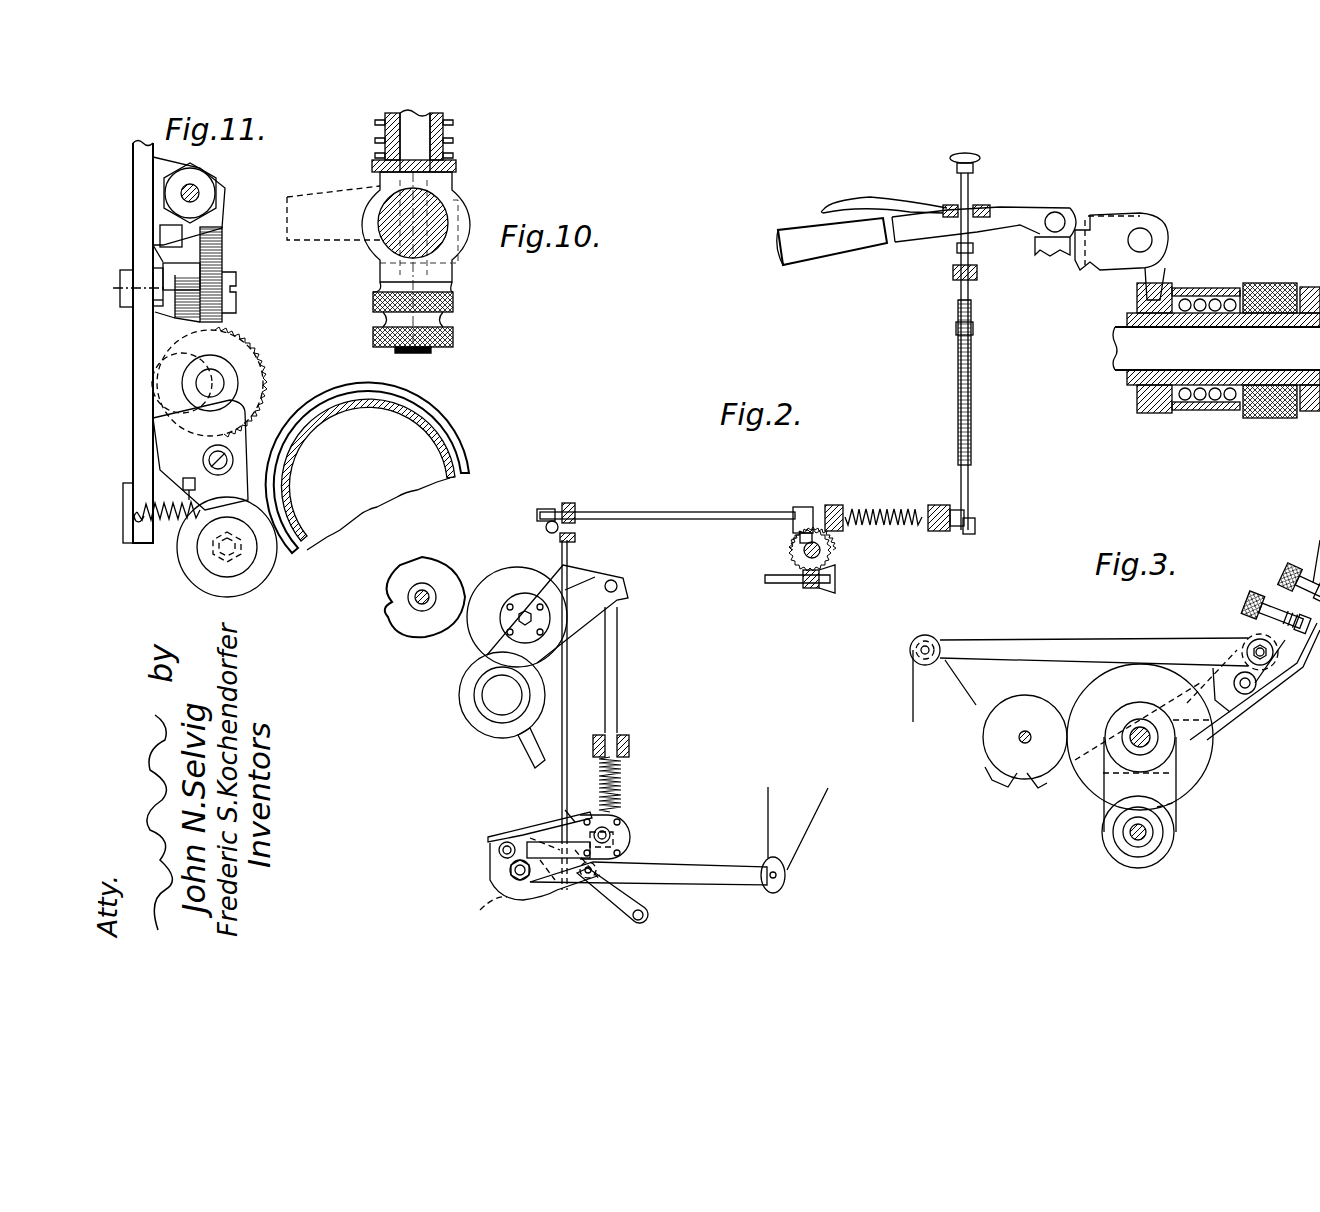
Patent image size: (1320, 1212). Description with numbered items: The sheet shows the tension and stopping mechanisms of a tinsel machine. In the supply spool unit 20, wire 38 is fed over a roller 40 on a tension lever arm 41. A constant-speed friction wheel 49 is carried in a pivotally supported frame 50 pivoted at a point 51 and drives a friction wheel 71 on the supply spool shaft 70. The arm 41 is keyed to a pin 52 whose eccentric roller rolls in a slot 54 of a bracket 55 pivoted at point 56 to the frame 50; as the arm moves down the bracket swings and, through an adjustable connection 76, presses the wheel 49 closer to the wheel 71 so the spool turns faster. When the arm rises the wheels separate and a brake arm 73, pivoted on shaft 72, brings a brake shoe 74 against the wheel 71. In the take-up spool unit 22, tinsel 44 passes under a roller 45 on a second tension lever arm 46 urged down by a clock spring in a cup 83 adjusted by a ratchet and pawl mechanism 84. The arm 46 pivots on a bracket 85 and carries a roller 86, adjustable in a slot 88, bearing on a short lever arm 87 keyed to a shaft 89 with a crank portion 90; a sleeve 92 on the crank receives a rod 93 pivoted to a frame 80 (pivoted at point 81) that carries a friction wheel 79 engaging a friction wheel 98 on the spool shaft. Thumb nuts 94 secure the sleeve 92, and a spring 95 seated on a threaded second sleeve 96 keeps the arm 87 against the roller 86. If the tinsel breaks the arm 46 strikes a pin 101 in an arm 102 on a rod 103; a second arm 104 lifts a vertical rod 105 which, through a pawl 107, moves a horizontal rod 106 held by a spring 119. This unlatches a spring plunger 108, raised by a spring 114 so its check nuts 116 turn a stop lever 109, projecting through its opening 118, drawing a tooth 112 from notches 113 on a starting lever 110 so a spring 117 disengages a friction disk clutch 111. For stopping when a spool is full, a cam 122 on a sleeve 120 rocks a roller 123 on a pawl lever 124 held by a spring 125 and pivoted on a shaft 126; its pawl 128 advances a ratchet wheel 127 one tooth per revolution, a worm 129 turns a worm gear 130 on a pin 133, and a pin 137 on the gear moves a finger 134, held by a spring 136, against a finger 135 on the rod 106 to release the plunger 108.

In FIG. 3, the supply spool unit 20 is at (1043, 842).
In FIG. 2, the take-up spool unit 22 is at (447, 666).
In FIG. 3, the wire 38 is at (912, 688).
In FIG. 3, the roller 40 is at (920, 635).
In FIG. 3, the tension lever arm 41 is at (1070, 640).
In FIG. 2, the tinsel 44 is at (820, 822).
In FIG. 2, the roller 45 is at (787, 885).
In FIG. 2, the second tension lever arm 46 is at (686, 872).
In FIG. 3, the friction wheel 49 is at (1190, 790).
In FIG. 3, the pivotally supported frame 50 is at (1160, 790).
In FIG. 3, the pivot point 51 is at (1145, 838).
In FIG. 3, the pin 52 is at (1268, 668).
In FIG. 3, the slot 54 is at (1263, 673).
In FIG. 3, the bracket 55 is at (1247, 685).
In FIG. 3, the pivot point 56 is at (1243, 695).
In FIG. 3, the shaft 70 is at (1018, 737).
In FIG. 3, the friction wheel 71 is at (985, 752).
In FIG. 3, the shaft 72 is at (1132, 734).
In FIG. 3, the brake arm 73 is at (1070, 800).
In FIG. 3, the brake shoe 74 is at (1000, 785).
In FIG. 3, the adjustable connection 76 is at (1278, 590).
In FIG. 2, the friction wheel 79 is at (504, 568).
In FIG. 2, the pivotally supported frame 80 is at (545, 580).
In FIG. 2, the pivot point 81 is at (500, 702).
In FIG. 2, the cup 83 is at (480, 910).
In FIG. 2, the ratchet and pawl mechanism 84 is at (538, 838).
In FIG. 2, the bracket 85 is at (578, 812).
In FIG. 2, the roller 86 is at (497, 851).
In FIG. 10, the short lever arm 87 is at (312, 242).
In FIG. 2, the short lever arm 87 is at (495, 838).
In FIG. 2, the slot 88 is at (508, 875).
In FIG. 10, the shaft 89 is at (438, 218).
In FIG. 2, the shaft 89 is at (610, 838).
In FIG. 10, the crank portion 90 is at (402, 190).
In FIG. 2, the crank portion 90 is at (618, 805).
In FIG. 10, the sleeve 92 is at (450, 270).
In FIG. 2, the sleeve 92 is at (625, 818).
In FIG. 10, the rod 93 is at (413, 135).
In FIG. 2, the rod 93 is at (620, 665).
In FIG. 10, the thumb nuts 94 is at (455, 330).
In FIG. 10, the spring 95 is at (457, 158).
In FIG. 2, the spring 95 is at (600, 750).
In FIG. 10, the second sleeve 96 is at (453, 125).
In FIG. 2, the second sleeve 96 is at (620, 780).
In FIG. 2, the friction wheel 98 is at (440, 555).
In FIG. 2, the pin 101 is at (630, 905).
In FIG. 2, the arm 102 is at (612, 905).
In FIG. 2, the rod 103 is at (570, 893).
In FIG. 2, the second arm 104 is at (547, 887).
In FIG. 2, the vertical rod 105 is at (573, 655).
In FIG. 11, the horizontal rod 106 is at (196, 188).
In FIG. 2, the horizontal rod 106 is at (640, 512).
In FIG. 2, the pawl 107 is at (560, 508).
In FIG. 2, the spring plunger 108 is at (972, 500).
In FIG. 2, the stop lever 109 is at (975, 205).
In FIG. 2, the starting lever 110 is at (806, 247).
In FIG. 2, the friction disk clutch 111 is at (1256, 275).
In FIG. 2, the tooth 112 is at (1065, 245).
In FIG. 2, the notches 113 is at (1085, 260).
In FIG. 2, the spring 114 is at (972, 422).
In FIG. 2, the check nuts 116 is at (955, 250).
In FIG. 2, the spring 117 is at (1185, 400).
In FIG. 2, the opening 118 is at (960, 195).
In FIG. 2, the spring 119 is at (880, 510).
In FIG. 11, the sleeve 120 is at (300, 552).
In FIG. 11, the cam 122 is at (455, 432).
In FIG. 11, the roller 123 is at (230, 597).
In FIG. 11, the pawl lever 124 is at (242, 430).
In FIG. 11, the spring 125 is at (168, 522).
In FIG. 11, the shaft 126 is at (218, 378).
In FIG. 2, the shaft 126 is at (770, 583).
In FIG. 11, the ratchet wheel 127 is at (237, 400).
In FIG. 11, the pawl 128 is at (140, 485).
In FIG. 11, the worm 129 is at (243, 336).
In FIG. 2, the worm 129 is at (812, 590).
In FIG. 11, the worm gear 130 is at (222, 250).
In FIG. 2, the worm gear 130 is at (792, 552).
In FIG. 11, the pin 133 is at (118, 283).
In FIG. 11, the finger 134 is at (168, 256).
In FIG. 2, the finger 134 is at (828, 538).
In FIG. 11, the finger 135 is at (178, 238).
In FIG. 2, the finger 135 is at (806, 505).
In FIG. 11, the spring 136 is at (204, 283).
In FIG. 11, the pin 137 is at (185, 272).